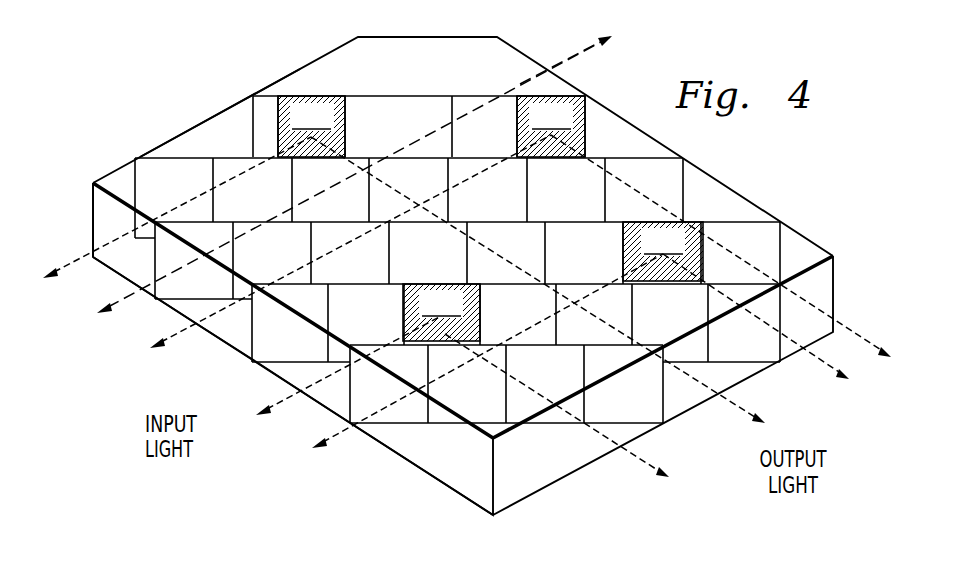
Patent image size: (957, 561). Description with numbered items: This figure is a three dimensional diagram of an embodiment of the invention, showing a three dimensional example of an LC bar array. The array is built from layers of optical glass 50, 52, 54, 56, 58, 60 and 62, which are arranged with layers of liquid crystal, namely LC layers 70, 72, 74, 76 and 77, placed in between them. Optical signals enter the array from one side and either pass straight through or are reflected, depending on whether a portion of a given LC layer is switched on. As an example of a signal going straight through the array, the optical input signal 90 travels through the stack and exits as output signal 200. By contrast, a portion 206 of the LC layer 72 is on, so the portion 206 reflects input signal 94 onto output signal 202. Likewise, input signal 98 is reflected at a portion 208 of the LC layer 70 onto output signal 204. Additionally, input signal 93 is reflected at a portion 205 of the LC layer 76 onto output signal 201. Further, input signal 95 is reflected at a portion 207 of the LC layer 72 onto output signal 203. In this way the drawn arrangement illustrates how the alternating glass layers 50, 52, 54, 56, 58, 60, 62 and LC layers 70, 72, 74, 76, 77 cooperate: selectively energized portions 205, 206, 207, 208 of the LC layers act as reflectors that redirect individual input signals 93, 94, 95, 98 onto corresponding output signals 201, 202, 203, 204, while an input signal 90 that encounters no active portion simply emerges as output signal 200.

The layer of optical glass 50 is at (335, 56).
The layer of optical glass 52 is at (208, 125).
The layer of optical glass 54 is at (113, 178).
The layer of optical glass 56 is at (173, 309).
The layer of optical glass 58 is at (230, 343).
The layer of optical glass 60 is at (273, 378).
The layer of optical glass 62 is at (433, 477).
The LC layer 70 is at (779, 240).
The LC layer 72 is at (256, 116).
The LC layer 74 is at (135, 160).
The LC layer 76 is at (780, 352).
The LC layer 77 is at (657, 408).
The optical input signal 90 is at (130, 294).
The input signal 93 is at (272, 410).
The input signal 94 is at (80, 260).
The input signal 95 is at (327, 444).
The input signal 98 is at (167, 343).
The output signal 200 is at (578, 56).
The output signal 201 is at (643, 458).
The output signal 202 is at (735, 411).
The output signal 203 is at (853, 331).
The output signal 204 is at (820, 364).
The portion of LC layer 205 is at (441, 312).
The portion of LC layer 206 is at (311, 126).
The portion of LC layer 207 is at (551, 126).
The portion of LC layer 208 is at (663, 251).